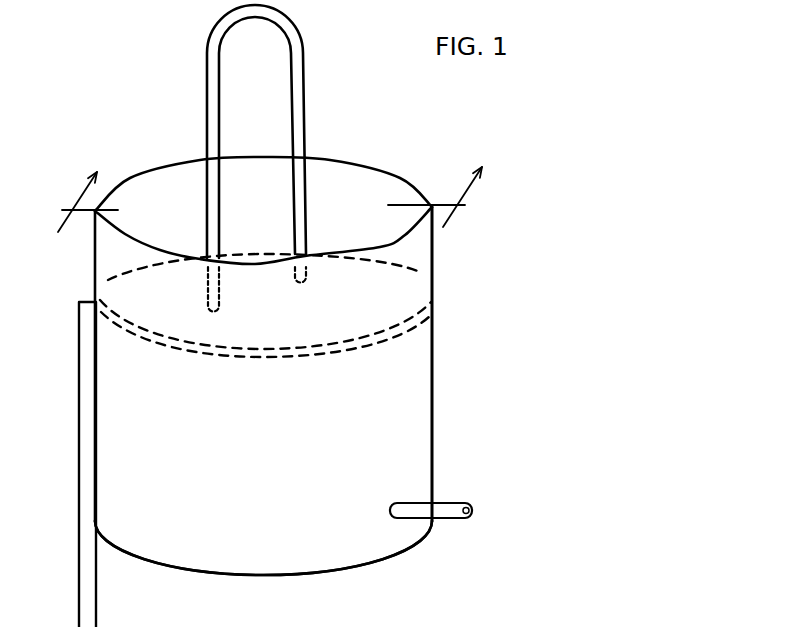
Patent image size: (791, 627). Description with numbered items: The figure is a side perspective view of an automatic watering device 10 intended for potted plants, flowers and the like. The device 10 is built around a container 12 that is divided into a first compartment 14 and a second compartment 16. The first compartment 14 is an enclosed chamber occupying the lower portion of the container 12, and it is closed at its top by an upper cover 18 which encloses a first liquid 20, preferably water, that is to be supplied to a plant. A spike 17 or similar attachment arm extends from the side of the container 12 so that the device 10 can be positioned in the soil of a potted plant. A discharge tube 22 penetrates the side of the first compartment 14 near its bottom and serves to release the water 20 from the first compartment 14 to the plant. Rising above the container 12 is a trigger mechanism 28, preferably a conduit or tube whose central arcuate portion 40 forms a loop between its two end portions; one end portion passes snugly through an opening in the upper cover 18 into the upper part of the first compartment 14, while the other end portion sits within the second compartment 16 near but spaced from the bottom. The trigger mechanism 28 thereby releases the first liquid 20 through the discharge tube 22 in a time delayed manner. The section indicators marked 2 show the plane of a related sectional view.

The device 10 is at (448, 337).
The container 12 is at (437, 381).
The first compartment 14 is at (357, 482).
The second compartment 16 is at (353, 302).
The spike 17 is at (88, 553).
The upper cover 18 is at (148, 342).
The discharge tube 22 is at (452, 511).
The trigger mechanism 28 is at (283, 8).
The section line 2 is at (267, 215).
The first liquid 20 is at (378, 623).
The central arcuate portion 40 is at (686, 621).